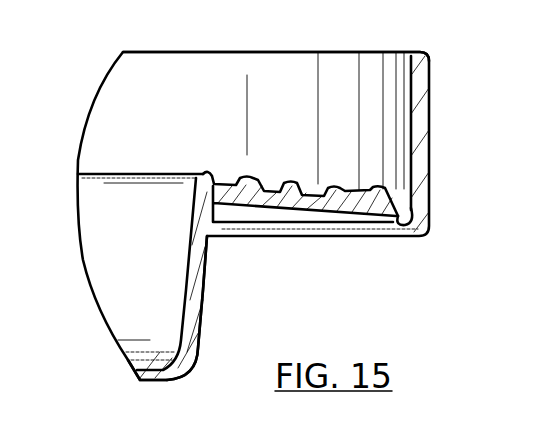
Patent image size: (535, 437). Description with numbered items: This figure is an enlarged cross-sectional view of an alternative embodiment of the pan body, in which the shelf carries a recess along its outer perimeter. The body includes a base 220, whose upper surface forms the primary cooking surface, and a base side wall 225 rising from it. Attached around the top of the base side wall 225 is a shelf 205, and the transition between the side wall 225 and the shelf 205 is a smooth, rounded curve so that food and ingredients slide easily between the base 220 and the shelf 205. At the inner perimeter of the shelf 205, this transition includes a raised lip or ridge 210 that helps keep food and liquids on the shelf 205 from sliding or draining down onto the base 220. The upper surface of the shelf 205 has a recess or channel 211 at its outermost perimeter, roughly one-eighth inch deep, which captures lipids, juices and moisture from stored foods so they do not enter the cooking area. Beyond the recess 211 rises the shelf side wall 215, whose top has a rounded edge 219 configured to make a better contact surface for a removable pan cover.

The shelf 205 is at (310, 204).
The ridge 210 is at (373, 195).
The recess 211 is at (408, 212).
The shelf side wall 215 is at (418, 101).
The rounded edge 219 is at (424, 52).
The base 220 is at (165, 378).
The base side wall 225 is at (197, 330).